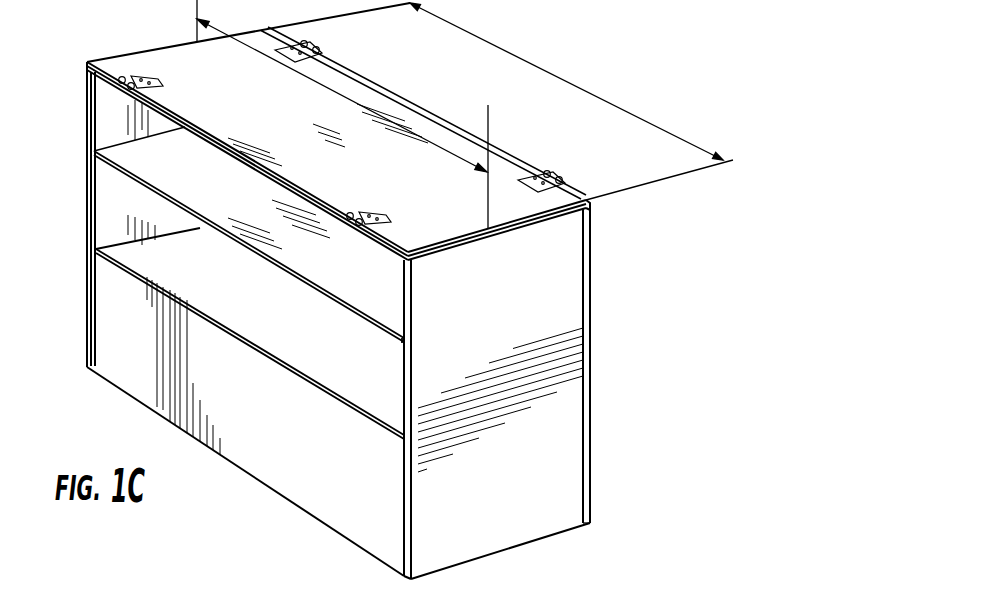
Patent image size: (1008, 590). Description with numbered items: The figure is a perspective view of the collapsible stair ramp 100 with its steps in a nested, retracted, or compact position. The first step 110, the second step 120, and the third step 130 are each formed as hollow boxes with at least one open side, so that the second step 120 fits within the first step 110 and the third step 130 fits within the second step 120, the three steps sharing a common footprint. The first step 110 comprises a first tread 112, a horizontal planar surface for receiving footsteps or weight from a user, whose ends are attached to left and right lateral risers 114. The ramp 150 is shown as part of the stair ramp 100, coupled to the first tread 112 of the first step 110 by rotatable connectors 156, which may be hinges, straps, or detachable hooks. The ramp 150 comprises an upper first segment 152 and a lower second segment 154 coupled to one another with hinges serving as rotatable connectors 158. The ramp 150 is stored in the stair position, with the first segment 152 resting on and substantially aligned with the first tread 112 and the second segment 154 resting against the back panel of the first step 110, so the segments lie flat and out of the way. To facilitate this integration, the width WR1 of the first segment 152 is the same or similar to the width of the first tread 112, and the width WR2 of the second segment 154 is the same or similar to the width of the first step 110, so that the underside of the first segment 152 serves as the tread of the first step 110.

The stair ramp 100 is at (113, 27).
The first step 110 is at (500, 513).
The first tread 112 is at (527, 223).
The lateral risers 114 is at (498, 328).
The second step 120 is at (185, 187).
The third step 130 is at (262, 452).
The ramp 150 is at (606, 364).
The first segment 152 is at (393, 177).
The second segment 154 is at (588, 297).
The rotatable connectors 156 is at (150, 77).
The rotatable connectors 158 is at (297, 45).
The width of the first segment WR1 is at (348, 97).
The width of the second segment WR2 is at (513, 52).